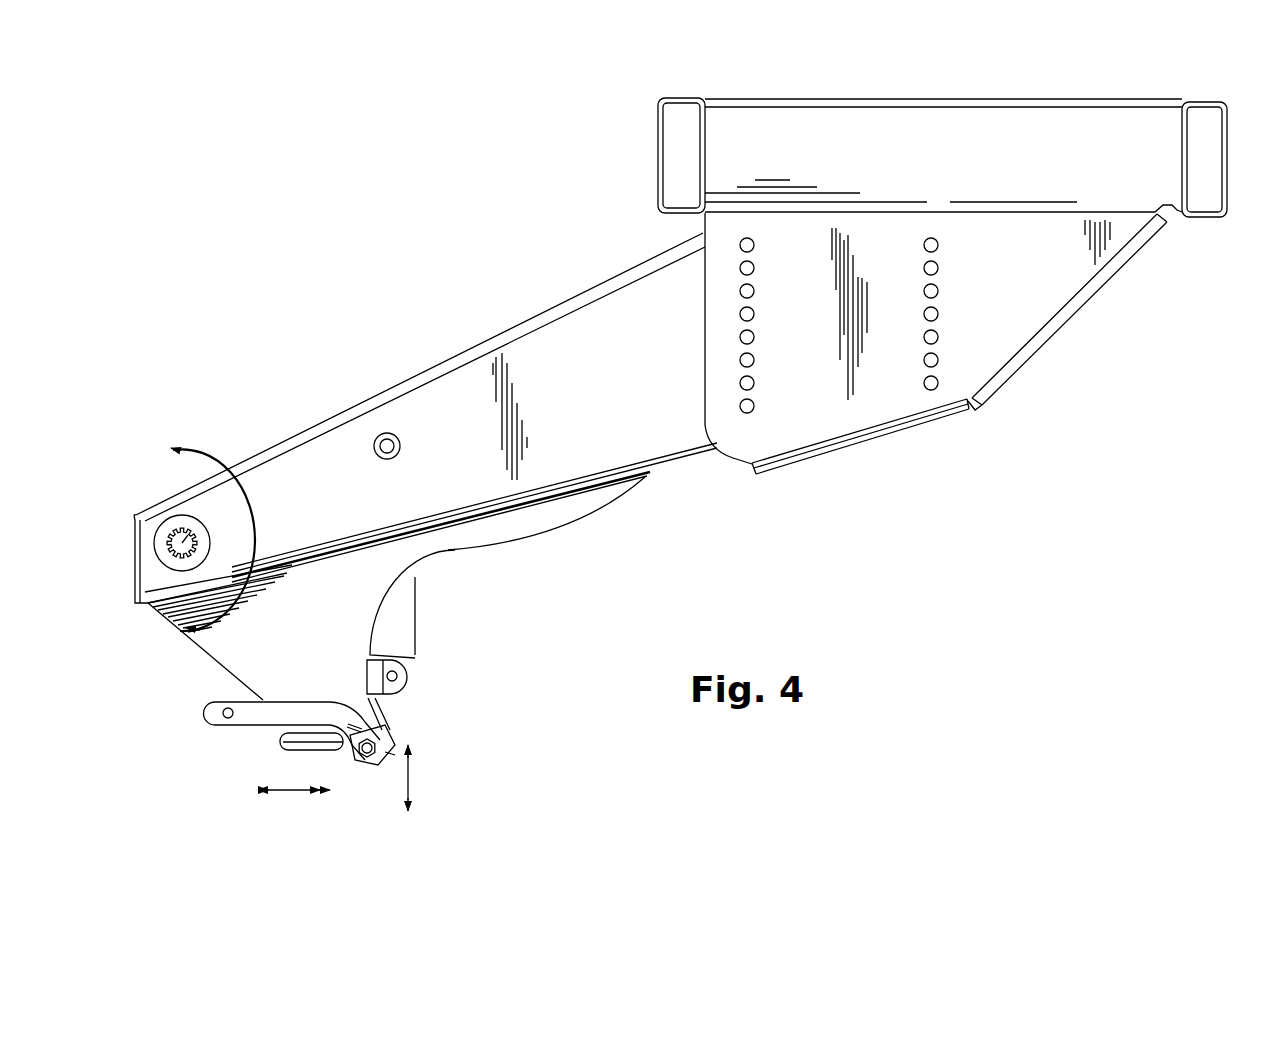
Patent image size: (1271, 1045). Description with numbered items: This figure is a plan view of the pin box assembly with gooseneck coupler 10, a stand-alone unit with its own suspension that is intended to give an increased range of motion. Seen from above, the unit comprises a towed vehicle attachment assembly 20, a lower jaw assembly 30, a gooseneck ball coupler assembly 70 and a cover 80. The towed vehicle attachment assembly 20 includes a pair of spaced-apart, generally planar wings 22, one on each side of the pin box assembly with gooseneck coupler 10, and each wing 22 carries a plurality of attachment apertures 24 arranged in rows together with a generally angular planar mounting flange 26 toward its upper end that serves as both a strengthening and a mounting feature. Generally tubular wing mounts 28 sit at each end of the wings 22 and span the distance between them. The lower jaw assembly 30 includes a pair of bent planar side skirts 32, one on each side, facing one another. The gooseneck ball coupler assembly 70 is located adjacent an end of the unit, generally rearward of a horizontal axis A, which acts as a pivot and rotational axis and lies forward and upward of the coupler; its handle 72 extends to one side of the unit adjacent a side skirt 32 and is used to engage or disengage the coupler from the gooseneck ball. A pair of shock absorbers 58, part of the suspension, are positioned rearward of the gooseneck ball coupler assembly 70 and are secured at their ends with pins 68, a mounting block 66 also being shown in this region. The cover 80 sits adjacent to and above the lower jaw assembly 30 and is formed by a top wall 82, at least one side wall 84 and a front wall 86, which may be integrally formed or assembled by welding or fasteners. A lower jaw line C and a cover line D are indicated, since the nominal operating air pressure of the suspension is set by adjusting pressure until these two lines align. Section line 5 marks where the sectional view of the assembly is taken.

The pin box assembly with gooseneck coupler 10 is at (350, 230).
The towed vehicle attachment assembly 20 is at (932, 123).
The wing 22 is at (918, 359).
The attachment apertures 24 is at (930, 392).
The mounting flange 26 is at (1058, 163).
The wing mount 28 is at (658, 160).
The lower jaw assembly 30 is at (404, 466).
The side skirt 32 is at (432, 543).
The shock absorber 58 is at (400, 625).
The mounting block 66 is at (425, 695).
The pins 68 is at (398, 676).
The gooseneck ball coupler assembly 70 is at (398, 731).
The handle 72 is at (265, 705).
The cover 80 is at (247, 445).
The top wall 82 is at (291, 438).
The side wall 84 is at (670, 432).
The front wall 86 is at (192, 583).
The section line 5 is at (1243, 98).
The horizontal axis A is at (174, 532).
The lower jaw line C is at (588, 498).
The cover line D is at (660, 474).